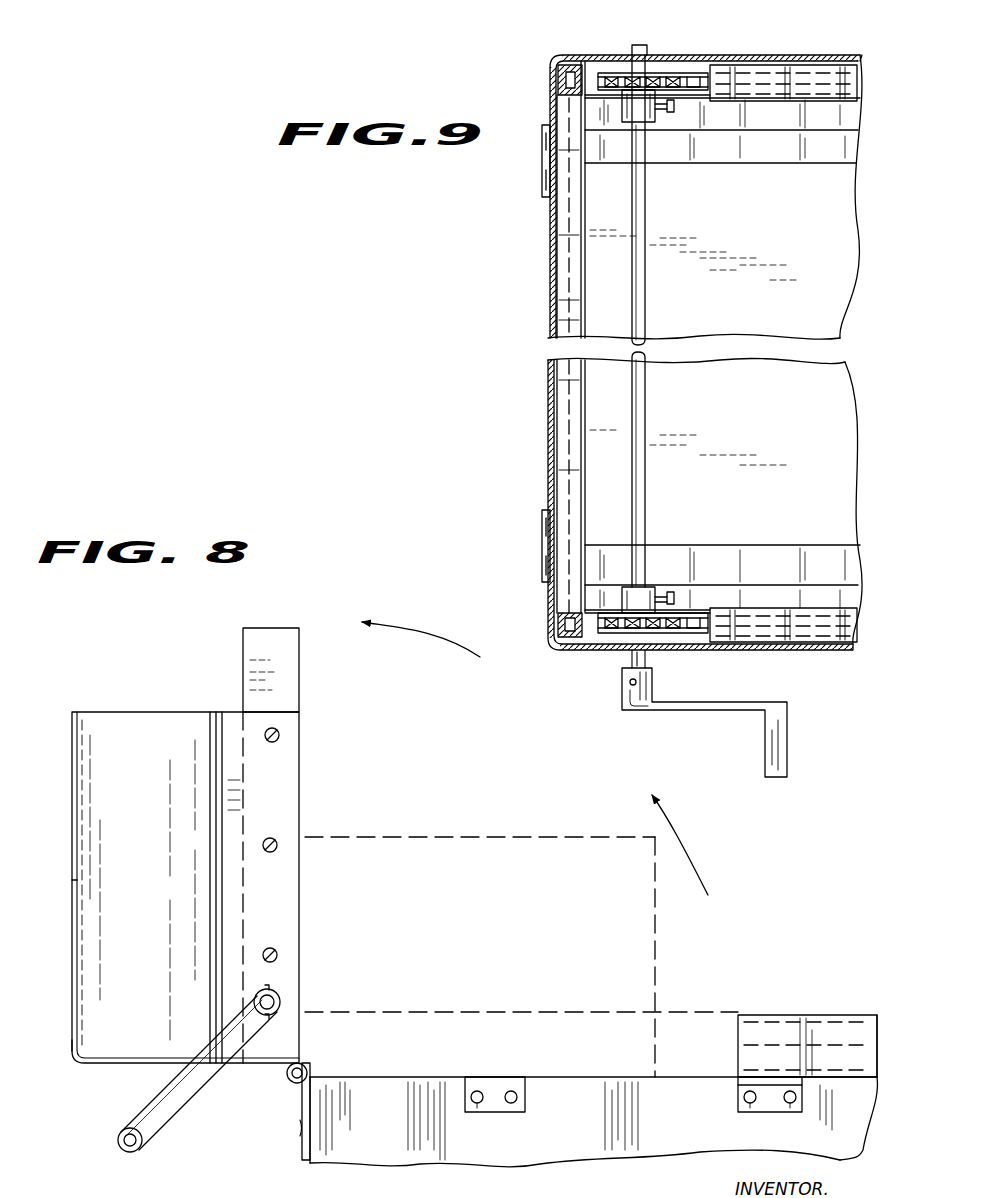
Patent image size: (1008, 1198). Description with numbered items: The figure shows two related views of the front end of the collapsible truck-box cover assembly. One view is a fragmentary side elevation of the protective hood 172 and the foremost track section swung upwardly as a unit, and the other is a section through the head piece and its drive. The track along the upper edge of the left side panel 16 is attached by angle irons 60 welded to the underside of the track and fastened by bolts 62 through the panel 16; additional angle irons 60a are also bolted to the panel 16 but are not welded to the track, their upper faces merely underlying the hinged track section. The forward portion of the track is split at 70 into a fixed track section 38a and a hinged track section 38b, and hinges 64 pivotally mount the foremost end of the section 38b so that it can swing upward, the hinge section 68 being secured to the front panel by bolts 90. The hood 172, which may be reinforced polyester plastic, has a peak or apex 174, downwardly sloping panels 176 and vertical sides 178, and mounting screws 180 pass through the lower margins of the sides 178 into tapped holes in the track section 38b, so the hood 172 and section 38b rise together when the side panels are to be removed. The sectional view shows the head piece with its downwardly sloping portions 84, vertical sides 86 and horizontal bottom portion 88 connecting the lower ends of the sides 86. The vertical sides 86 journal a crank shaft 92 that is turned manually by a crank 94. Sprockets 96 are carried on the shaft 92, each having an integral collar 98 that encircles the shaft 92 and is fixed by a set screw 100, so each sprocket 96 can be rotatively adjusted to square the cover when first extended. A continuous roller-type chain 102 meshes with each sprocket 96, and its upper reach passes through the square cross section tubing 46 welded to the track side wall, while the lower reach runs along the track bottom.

In FIG. 8, the left side panel 16 is at (640, 1130).
In FIG. 8, the fixed track section 38a is at (845, 998).
In FIG. 9, the hinged track section 38b is at (866, 78).
In FIG. 8, the hinged track section 38b is at (302, 732).
In FIG. 9, the square cross section tubing 46 is at (760, 132).
In FIG. 8, the angle irons 60 is at (738, 1098).
In FIG. 8, the additional angle irons 60a is at (508, 1112).
In FIG. 8, the bolts 62 is at (480, 1104).
In FIG. 9, the hinges 64 is at (540, 168).
In FIG. 8, the hinge section 68 is at (304, 1152).
In FIG. 8, the split 70 is at (270, 645).
In FIG. 9, the downwardly sloping portions 84 is at (556, 410).
In FIG. 9, the vertical sides 86 is at (570, 66).
In FIG. 9, the horizontal bottom portion 88 is at (570, 276).
In FIG. 8, the bolts 90 is at (298, 1130).
In FIG. 9, the crank shaft 92 is at (646, 310).
In FIG. 9, the crank 94 is at (740, 716).
In FIG. 8, the crank 94 is at (190, 1097).
In FIG. 9, the sprockets 96 is at (612, 75).
In FIG. 9, the collar 98 is at (634, 124).
In FIG. 9, the set screw 100 is at (672, 114).
In FIG. 9, the roller-type chain 102 is at (830, 103).
In FIG. 8, the protective hood 172 is at (68, 1062).
In FIG. 8, the peak or apex 174 is at (74, 883).
In FIG. 9, the downwardly sloping panels 176 is at (805, 55).
In FIG. 8, the downwardly sloping panels 176 is at (138, 735).
In FIG. 8, the vertical sides 178 is at (236, 726).
In FIG. 8, the mounting screws 180 is at (277, 846).